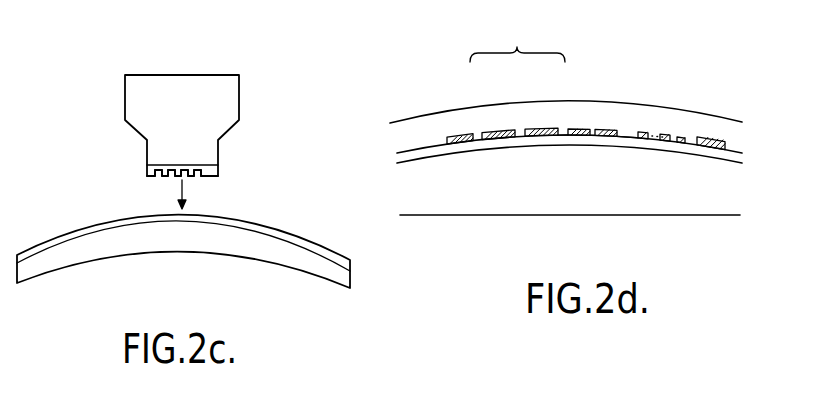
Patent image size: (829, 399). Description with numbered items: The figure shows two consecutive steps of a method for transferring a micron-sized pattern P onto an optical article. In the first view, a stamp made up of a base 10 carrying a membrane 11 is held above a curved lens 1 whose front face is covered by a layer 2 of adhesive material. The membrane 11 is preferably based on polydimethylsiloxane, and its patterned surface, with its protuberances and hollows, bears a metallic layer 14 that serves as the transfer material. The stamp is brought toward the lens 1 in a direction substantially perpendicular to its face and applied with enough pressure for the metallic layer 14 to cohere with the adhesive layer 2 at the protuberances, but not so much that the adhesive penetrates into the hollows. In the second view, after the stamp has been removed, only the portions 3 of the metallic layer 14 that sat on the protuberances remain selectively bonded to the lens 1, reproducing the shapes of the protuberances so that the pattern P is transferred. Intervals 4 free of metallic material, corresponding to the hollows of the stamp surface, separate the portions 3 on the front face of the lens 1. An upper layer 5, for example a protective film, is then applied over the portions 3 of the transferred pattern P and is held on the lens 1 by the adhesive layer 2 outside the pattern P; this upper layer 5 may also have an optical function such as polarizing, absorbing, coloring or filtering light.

In FIG. 2d, the lens 1 is at (583, 193).
In FIG. 2c, the layer of adhesive material 2 is at (67, 238).
In FIG. 2d, the layer of adhesive material 2 is at (433, 152).
In FIG. 2d, the portions of the metallic layer 3 is at (540, 129).
In FIG. 2d, the intervals free of metallic material 4 is at (628, 132).
In FIG. 2d, the upper layer 5 is at (685, 125).
In FIG. 2c, the base 10 is at (148, 110).
In FIG. 2c, the membrane 11 is at (224, 192).
In FIG. 2c, the metallic layer 14 is at (199, 177).
In FIG. 2d, the pattern P is at (517, 44).